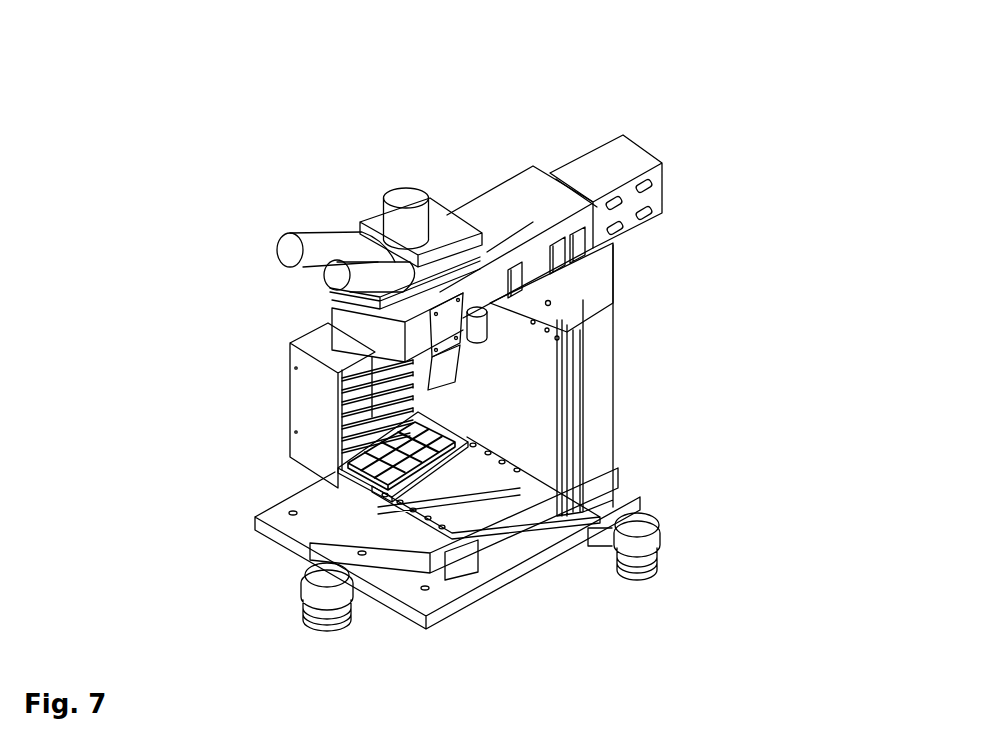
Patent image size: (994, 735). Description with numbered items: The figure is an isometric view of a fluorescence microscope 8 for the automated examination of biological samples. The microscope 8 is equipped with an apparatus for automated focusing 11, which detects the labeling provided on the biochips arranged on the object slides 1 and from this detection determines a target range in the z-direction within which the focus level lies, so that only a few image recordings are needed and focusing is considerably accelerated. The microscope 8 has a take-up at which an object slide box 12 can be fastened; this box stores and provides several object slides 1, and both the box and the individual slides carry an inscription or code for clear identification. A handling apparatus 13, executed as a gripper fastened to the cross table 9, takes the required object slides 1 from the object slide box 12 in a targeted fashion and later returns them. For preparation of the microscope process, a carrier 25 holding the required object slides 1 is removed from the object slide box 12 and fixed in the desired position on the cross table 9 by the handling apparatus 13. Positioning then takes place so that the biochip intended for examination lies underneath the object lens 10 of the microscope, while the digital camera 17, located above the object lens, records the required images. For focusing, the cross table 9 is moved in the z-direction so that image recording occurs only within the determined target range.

The microscope 8 is at (760, 145).
The digital camera 17 is at (381, 178).
The apparatus for automated focusing 11 is at (362, 322).
The object lens 10 is at (366, 349).
The object slide box 12 is at (310, 415).
The handling apparatus 13 is at (452, 430).
The object slide 1 is at (421, 463).
The carrier 25 is at (420, 458).
The cross table 9 is at (457, 512).